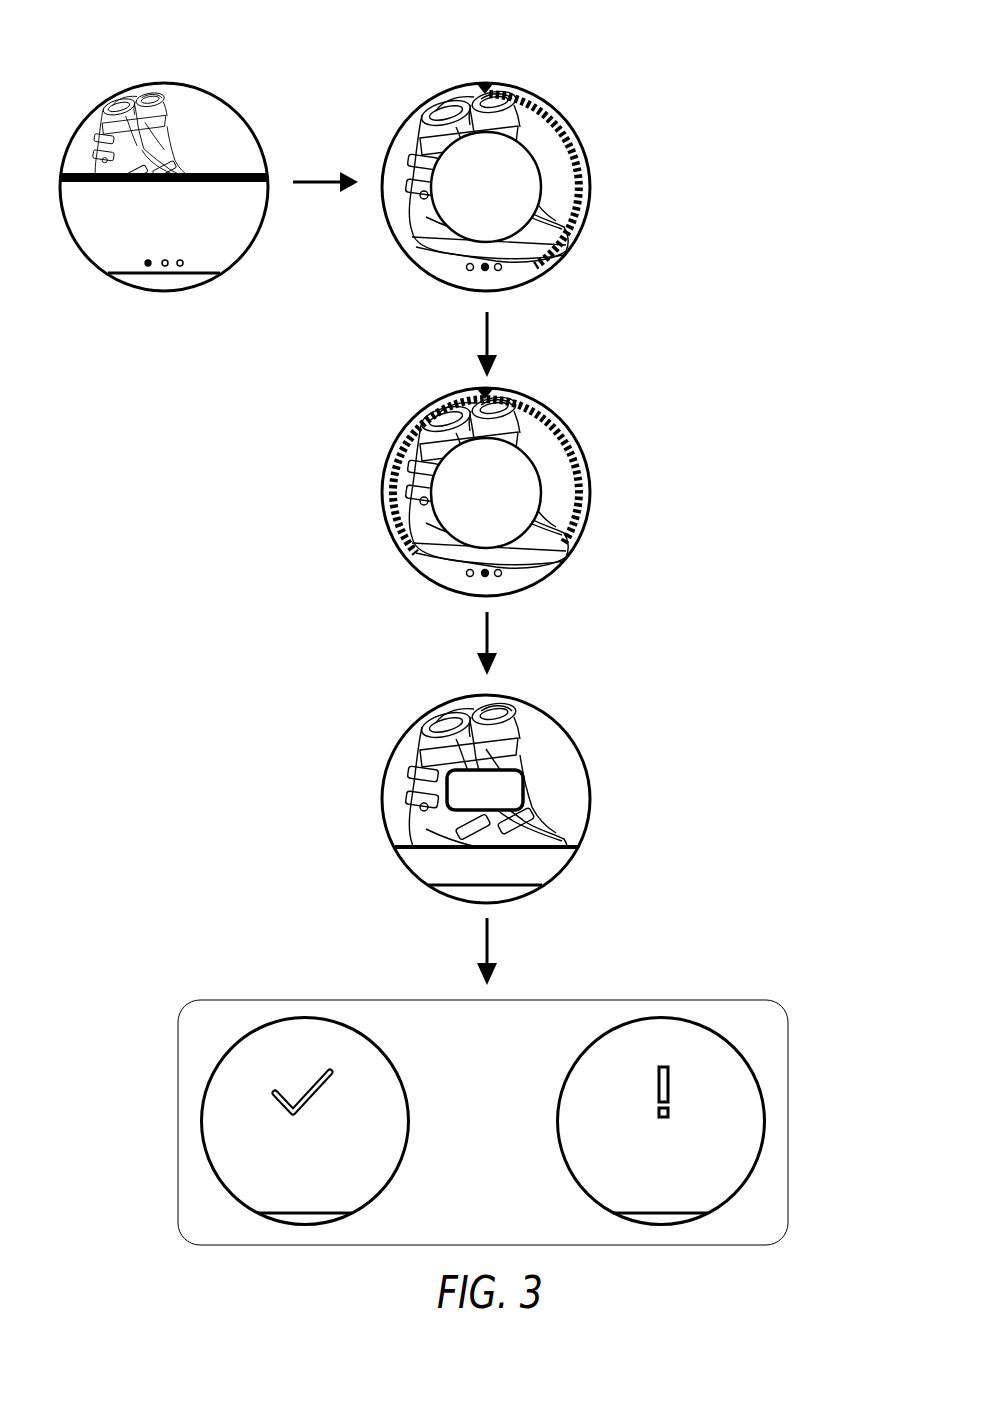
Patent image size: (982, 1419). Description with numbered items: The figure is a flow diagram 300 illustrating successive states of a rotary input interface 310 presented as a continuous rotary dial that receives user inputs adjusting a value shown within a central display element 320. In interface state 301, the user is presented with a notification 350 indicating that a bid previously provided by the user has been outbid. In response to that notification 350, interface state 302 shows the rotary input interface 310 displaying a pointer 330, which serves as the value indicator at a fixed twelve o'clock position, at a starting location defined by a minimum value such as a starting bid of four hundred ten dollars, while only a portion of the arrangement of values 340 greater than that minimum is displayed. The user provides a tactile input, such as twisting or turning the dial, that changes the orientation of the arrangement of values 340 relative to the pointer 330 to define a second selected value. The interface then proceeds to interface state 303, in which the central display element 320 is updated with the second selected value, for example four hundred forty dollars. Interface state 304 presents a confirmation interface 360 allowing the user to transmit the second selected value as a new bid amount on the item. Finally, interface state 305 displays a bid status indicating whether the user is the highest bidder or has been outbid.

The bidding user interface flow 300 is at (797, 58).
The interface state 301 is at (253, 132).
The interface state 302 is at (577, 130).
The interface state 303 is at (567, 423).
The interface state 304 is at (563, 728).
The interface state 305 is at (787, 1010).
The rotary input interface 310 is at (513, 273).
The central display element 320 is at (428, 268).
The pointer 330 is at (487, 84).
The arrangement of values 340 is at (600, 203).
The notification 350 is at (127, 257).
The confirmation interface 360 is at (587, 830).